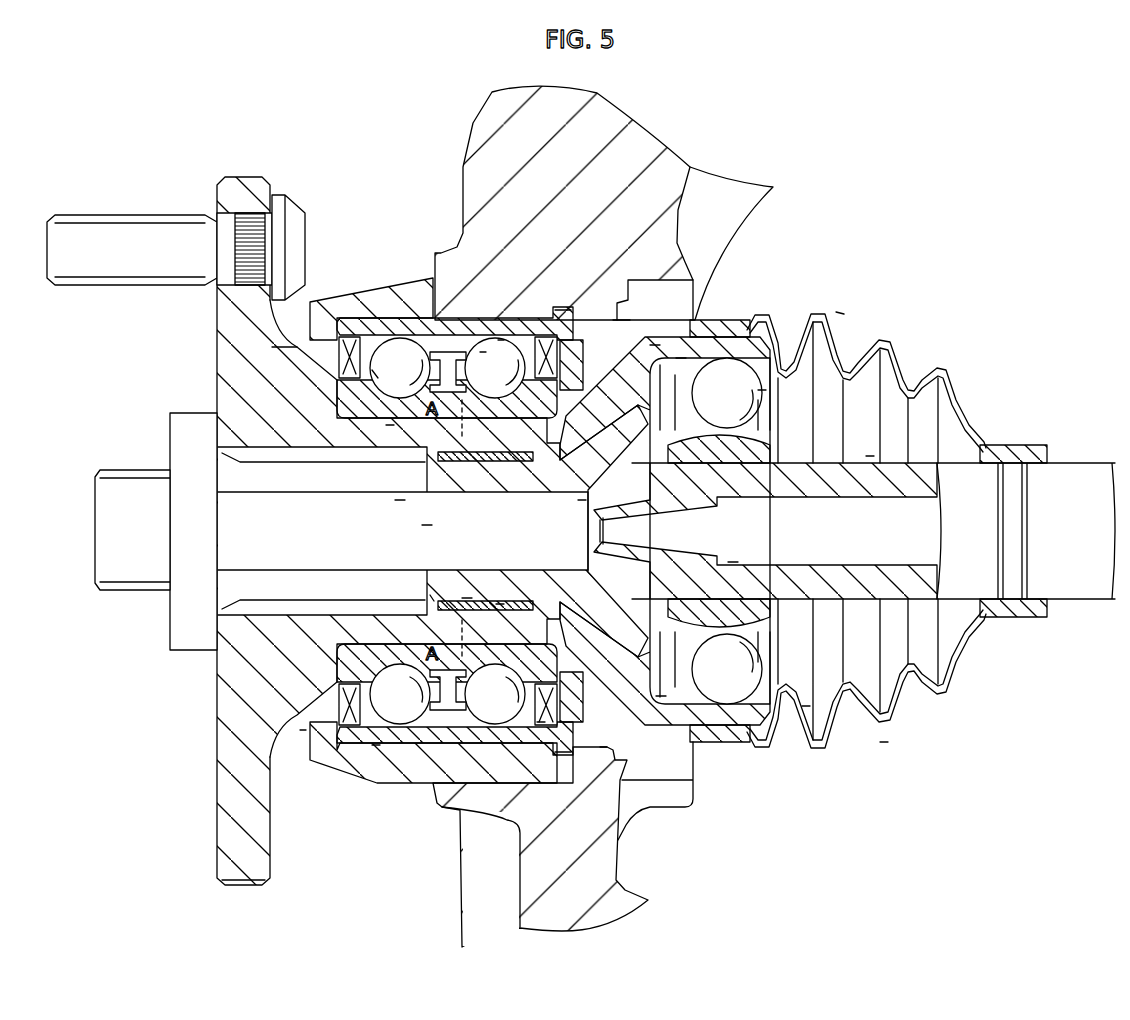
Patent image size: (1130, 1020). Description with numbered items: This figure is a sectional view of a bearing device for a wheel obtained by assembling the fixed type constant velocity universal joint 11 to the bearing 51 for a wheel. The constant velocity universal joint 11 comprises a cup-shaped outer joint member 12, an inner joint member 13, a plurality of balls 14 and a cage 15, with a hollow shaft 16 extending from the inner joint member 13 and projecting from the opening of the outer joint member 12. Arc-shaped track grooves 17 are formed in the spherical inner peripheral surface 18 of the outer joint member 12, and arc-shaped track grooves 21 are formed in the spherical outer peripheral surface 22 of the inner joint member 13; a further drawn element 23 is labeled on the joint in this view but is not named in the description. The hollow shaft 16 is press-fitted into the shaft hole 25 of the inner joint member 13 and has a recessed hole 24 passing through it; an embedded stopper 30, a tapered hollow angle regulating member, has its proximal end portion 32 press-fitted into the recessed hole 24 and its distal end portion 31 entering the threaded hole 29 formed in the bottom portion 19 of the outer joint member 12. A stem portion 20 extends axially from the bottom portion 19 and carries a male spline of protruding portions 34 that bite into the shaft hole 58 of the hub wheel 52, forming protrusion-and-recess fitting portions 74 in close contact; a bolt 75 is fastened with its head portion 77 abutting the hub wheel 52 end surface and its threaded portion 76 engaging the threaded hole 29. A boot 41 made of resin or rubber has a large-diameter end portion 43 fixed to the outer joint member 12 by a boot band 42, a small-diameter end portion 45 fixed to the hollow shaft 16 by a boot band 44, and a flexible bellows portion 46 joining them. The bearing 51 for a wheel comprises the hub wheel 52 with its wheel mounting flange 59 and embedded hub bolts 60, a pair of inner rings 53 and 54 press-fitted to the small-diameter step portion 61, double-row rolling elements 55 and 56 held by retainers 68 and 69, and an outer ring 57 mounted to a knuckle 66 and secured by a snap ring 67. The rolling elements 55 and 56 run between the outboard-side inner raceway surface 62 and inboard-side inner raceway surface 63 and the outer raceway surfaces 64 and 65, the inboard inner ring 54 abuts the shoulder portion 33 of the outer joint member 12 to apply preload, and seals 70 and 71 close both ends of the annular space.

The constant velocity universal joint 11 is at (617, 330).
The outer joint member 12 is at (637, 805).
The inner joint member 13 is at (778, 610).
The balls 14 is at (760, 390).
The cage 15 is at (806, 706).
The hollow shaft 16 is at (870, 455).
The track grooves 17 is at (655, 345).
The spherical inner peripheral surface 18 is at (662, 696).
The bottom portion 19 is at (576, 735).
The stem portion 20 is at (593, 445).
The track grooves 21 is at (763, 450).
The spherical outer peripheral surface 22 is at (680, 358).
The ball 23 is at (755, 712).
The recessed hole 24 is at (865, 565).
The shaft hole 25 is at (733, 562).
The threaded hole 29 is at (428, 530).
The embedded stopper 30 is at (610, 760).
The distal end portion 31 is at (582, 553).
The proximal end portion 32 is at (722, 502).
The shoulder portion 33 is at (573, 392).
The protruding portions 34 is at (432, 598).
The boot 41 is at (838, 315).
The boot band 42 is at (726, 322).
The large-diameter end portion 43 is at (726, 744).
The boot band 44 is at (1010, 447).
The small-diameter end portion 45 is at (1010, 618).
The bellows portion 46 is at (884, 740).
The bearing for a wheel 51 is at (333, 800).
The hub wheel 52 is at (215, 800).
The inner ring 53 is at (352, 438).
The inner ring 54 is at (467, 598).
The rolling elements 55 is at (402, 345).
The rolling elements 56 is at (490, 706).
The outer ring 57 is at (418, 786).
The shaft hole 58 is at (277, 462).
The wheel mounting flange 59 is at (228, 320).
The hub bolts 60 is at (122, 237).
The small-diameter step portion 61 is at (420, 490).
The outboard-side inner raceway surface 62 is at (390, 425).
The inboard-side inner raceway surface 63 is at (500, 604).
The outer raceway surface 64 is at (390, 335).
The outer raceway surface 65 is at (441, 805).
The knuckle 66 is at (485, 183).
The snap ring 67 is at (562, 308).
The retainer 68 is at (375, 747).
The retainer 69 is at (500, 340).
The seal 70 is at (303, 733).
The seal 71 is at (541, 722).
The protrusion-and-recess fitting portions 74 is at (484, 350).
The bolt 75 is at (120, 595).
The threaded portion 76 is at (583, 500).
The head portion 77 is at (180, 450).